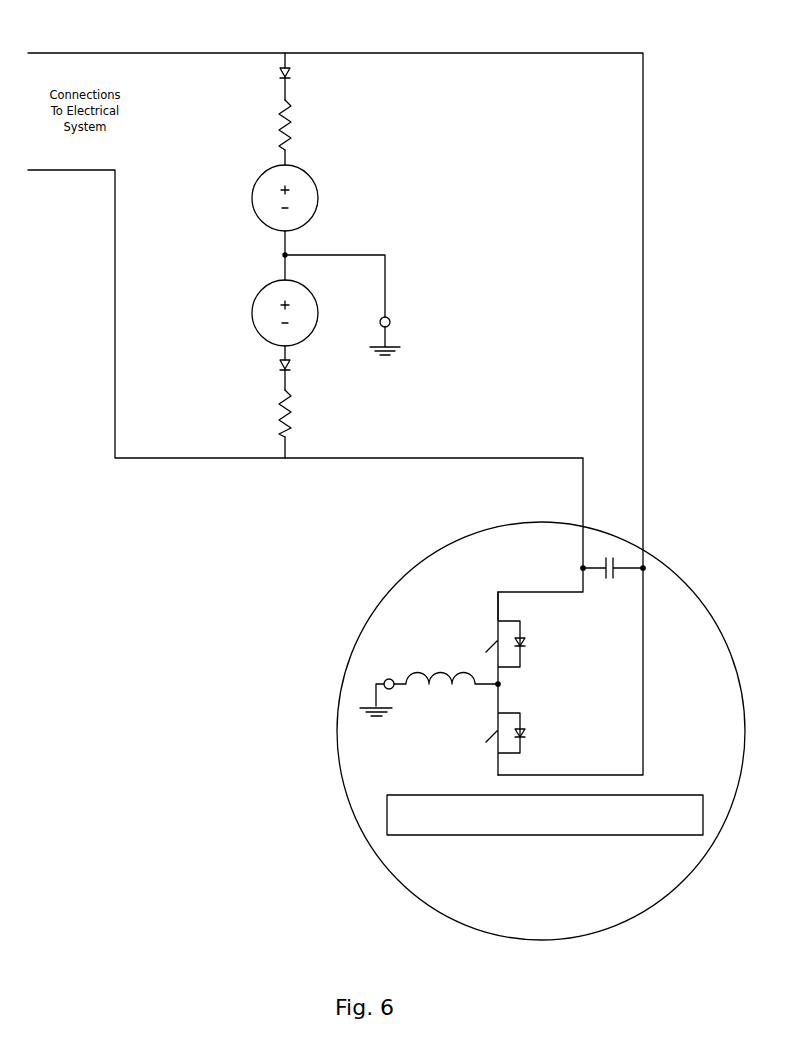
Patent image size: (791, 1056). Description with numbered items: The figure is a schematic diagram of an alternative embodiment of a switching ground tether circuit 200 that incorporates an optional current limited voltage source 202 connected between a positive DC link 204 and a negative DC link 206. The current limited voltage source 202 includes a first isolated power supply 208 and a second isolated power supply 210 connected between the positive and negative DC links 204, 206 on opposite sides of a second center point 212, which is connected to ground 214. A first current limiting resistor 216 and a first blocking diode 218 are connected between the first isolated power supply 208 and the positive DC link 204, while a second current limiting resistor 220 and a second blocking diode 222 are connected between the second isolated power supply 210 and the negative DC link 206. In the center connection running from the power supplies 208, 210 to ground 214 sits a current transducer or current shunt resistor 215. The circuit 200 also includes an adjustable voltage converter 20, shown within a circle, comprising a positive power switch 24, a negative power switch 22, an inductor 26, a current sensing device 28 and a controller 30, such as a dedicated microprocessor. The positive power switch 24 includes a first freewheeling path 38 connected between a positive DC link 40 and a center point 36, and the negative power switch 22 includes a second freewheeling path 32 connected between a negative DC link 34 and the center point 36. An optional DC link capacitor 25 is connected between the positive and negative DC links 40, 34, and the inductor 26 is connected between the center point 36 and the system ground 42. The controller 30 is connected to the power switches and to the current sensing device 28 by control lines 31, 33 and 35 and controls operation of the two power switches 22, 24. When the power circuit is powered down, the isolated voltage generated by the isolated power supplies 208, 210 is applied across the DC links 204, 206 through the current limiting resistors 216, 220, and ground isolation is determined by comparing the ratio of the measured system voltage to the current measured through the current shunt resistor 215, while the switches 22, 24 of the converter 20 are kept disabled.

The positive DC link 204 is at (190, 53).
The first blocking diode 218 is at (282, 72).
The first current limiting resistor 216 is at (291, 117).
The first isolated power supply 208 is at (319, 197).
The current limited voltage source 202 is at (455, 158).
The second center point 212 is at (284, 256).
The current transducer or current shunt resistor 215 is at (390, 320).
The ground 214 is at (400, 350).
The negative DC link 206 is at (115, 322).
The second isolated power supply 210 is at (258, 334).
The second blocking diode 222 is at (280, 368).
The second current limiting resistor 220 is at (292, 418).
The switching ground tether circuit 200 is at (197, 549).
The adjustable voltage converter 20 is at (316, 794).
The DC link capacitor 25 is at (610, 562).
The positive DC link 40 is at (532, 592).
The positive power switch 24 is at (492, 647).
The first freewheeling path 38 is at (523, 638).
The center point 36 is at (500, 684).
The inductor 26 is at (445, 678).
The current sensing device 28 is at (387, 679).
The system ground 42 is at (368, 714).
The negative power switch 22 is at (492, 738).
The second freewheeling path 32 is at (523, 723).
The negative DC link 34 is at (548, 775).
The controller 30 is at (665, 795).
The control line 31 is at (445, 836).
The control line 33 is at (546, 836).
The control line 35 is at (664, 839).